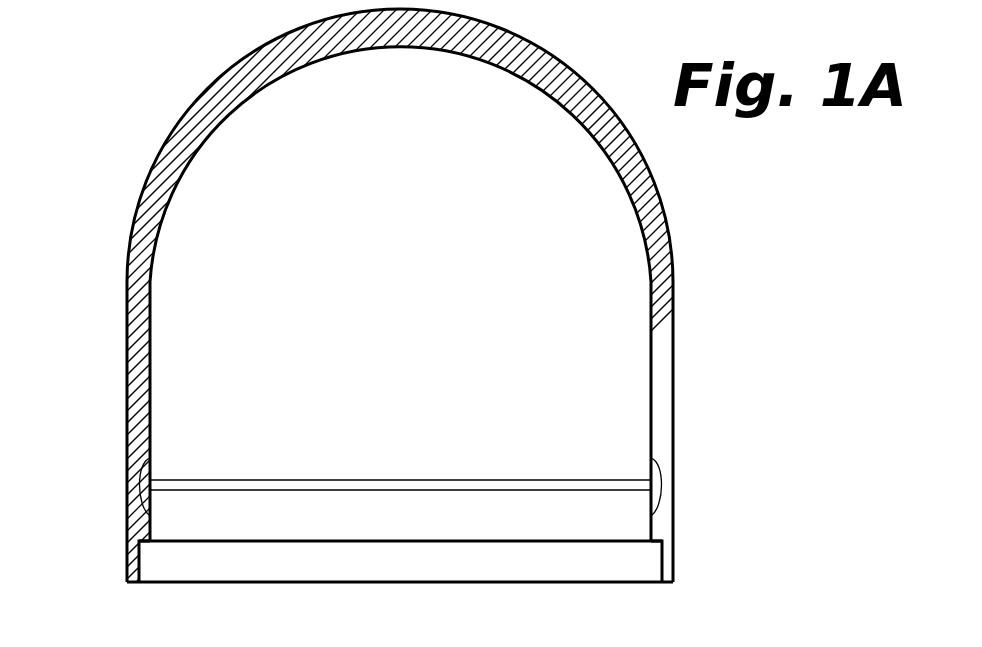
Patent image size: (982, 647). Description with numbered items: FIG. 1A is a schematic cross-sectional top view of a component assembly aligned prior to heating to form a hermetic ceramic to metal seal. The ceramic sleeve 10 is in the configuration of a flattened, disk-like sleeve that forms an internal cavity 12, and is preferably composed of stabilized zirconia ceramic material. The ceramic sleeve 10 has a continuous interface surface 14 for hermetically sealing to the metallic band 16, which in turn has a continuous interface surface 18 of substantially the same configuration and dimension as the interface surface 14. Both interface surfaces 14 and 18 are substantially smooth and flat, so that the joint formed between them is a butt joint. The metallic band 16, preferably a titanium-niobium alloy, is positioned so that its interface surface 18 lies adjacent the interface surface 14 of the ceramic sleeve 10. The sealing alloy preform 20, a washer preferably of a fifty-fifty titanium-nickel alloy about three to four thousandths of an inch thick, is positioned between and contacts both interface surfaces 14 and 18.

The ceramic sleeve 10 is at (583, 84).
The internal cavity 12 is at (404, 297).
The interface surface 14 is at (127, 452).
The metallic band 16 is at (666, 528).
The interface surface 18 is at (131, 517).
The sealing alloy preform 20 is at (127, 482).